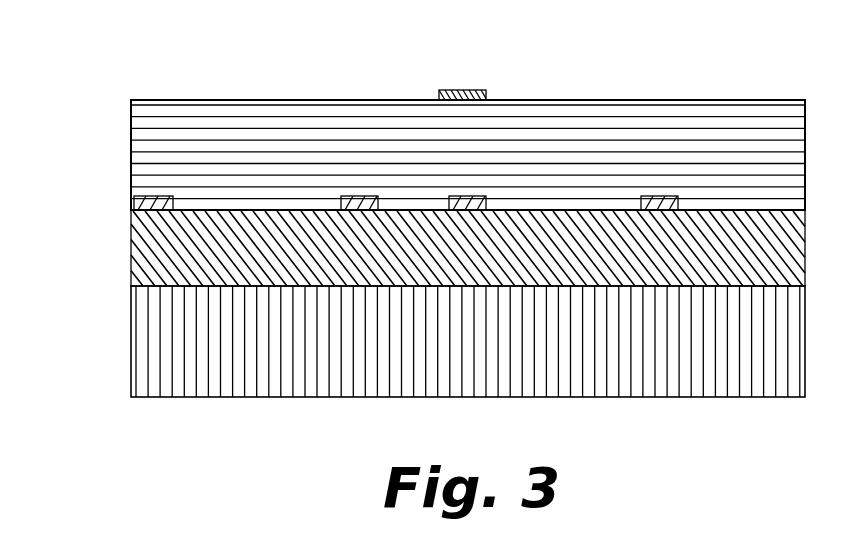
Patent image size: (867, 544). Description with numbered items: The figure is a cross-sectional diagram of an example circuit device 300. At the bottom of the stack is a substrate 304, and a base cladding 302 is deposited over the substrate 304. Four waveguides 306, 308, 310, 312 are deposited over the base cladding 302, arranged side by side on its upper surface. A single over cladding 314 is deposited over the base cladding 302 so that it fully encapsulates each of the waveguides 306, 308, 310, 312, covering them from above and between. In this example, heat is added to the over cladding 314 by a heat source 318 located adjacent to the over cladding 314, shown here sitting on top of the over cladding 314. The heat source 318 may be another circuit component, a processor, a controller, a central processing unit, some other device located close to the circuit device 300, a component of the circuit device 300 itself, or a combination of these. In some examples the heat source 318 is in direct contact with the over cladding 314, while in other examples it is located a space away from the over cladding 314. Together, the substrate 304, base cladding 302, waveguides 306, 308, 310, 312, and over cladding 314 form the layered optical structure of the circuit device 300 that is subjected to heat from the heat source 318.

The circuit device 300 is at (143, 70).
The base cladding 302 is at (173, 257).
The substrate 304 is at (163, 341).
The waveguide 306 is at (483, 197).
The waveguide 308 is at (365, 197).
The waveguide 310 is at (663, 197).
The waveguide 312 is at (162, 200).
The over cladding 314 is at (160, 184).
The heat source 318 is at (468, 92).